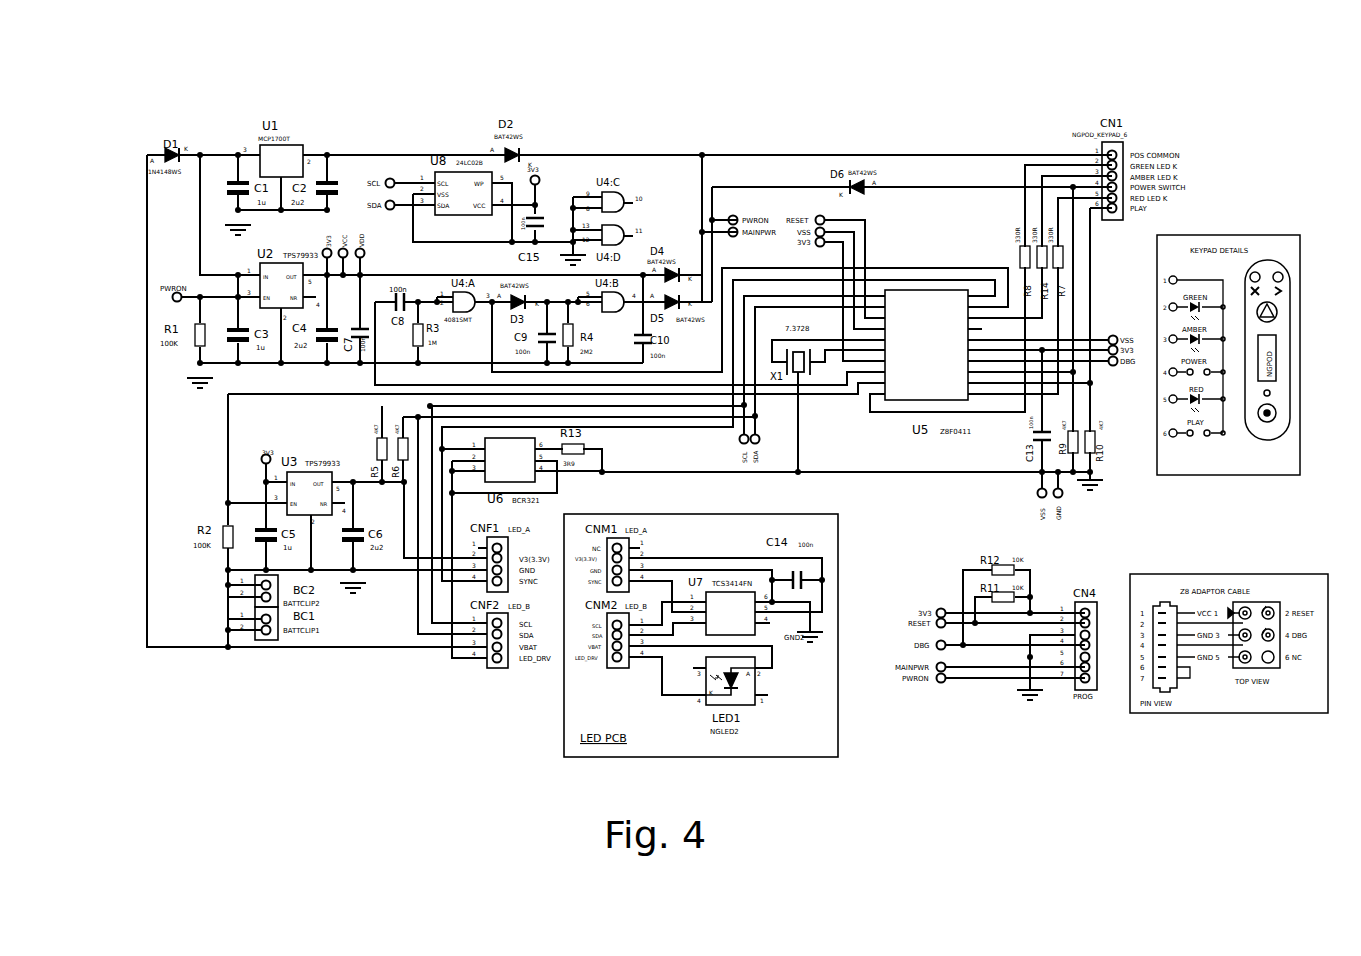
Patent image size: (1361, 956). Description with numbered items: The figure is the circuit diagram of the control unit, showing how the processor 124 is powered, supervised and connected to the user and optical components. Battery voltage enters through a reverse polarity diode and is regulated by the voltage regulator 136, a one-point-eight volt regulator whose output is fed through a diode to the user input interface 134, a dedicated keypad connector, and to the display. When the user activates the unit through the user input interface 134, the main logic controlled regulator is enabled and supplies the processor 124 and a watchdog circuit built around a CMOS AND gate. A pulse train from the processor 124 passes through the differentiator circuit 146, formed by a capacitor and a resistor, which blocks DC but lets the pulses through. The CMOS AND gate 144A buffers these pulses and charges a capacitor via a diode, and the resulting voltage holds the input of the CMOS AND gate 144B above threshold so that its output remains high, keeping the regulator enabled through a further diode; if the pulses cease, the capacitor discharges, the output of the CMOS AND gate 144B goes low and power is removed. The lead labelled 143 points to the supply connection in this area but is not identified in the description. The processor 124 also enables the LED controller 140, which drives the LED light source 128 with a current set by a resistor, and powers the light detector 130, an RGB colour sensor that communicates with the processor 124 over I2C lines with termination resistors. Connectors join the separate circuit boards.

The voltage regulator 136 is at (283, 157).
The differentiator circuit 146 is at (393, 265).
The supply line 143 is at (548, 264).
The CMOS AND gate 144A is at (453, 297).
The CMOS AND gate 144B is at (613, 300).
The user input interface 134 is at (1110, 153).
The processor 124 is at (923, 323).
The LED controller 140 is at (512, 470).
The light detector 130 is at (727, 603).
The light source 128 is at (781, 694).